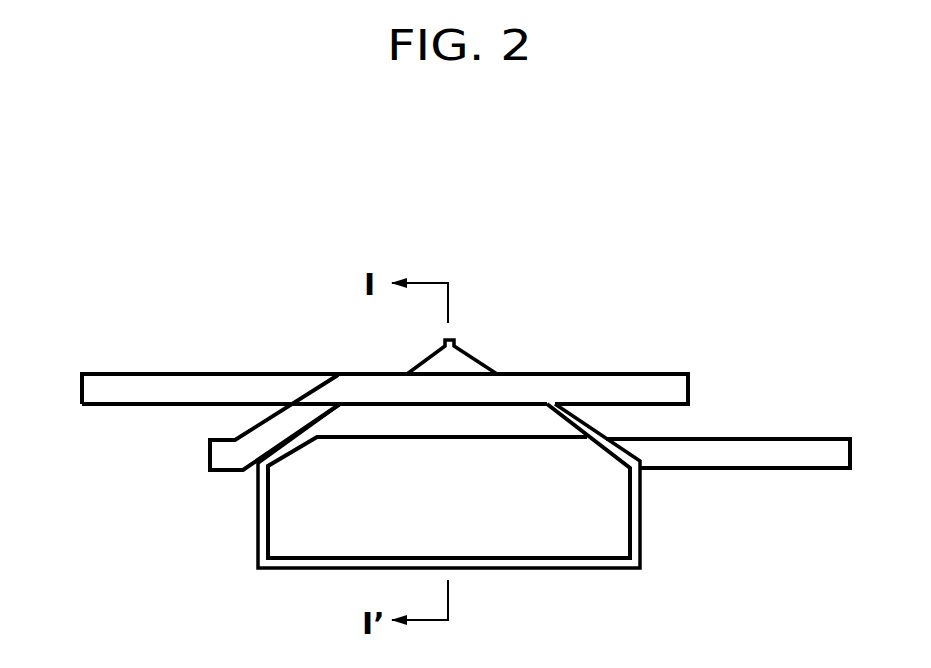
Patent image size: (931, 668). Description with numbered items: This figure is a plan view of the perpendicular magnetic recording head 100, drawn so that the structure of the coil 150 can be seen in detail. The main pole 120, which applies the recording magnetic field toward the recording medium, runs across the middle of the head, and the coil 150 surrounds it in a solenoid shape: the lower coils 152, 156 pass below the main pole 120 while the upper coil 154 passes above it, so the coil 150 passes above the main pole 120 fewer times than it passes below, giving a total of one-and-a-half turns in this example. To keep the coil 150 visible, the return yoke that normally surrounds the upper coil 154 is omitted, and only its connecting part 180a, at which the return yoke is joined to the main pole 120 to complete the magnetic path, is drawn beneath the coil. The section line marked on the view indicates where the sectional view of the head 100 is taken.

The perpendicular magnetic recording head 100 is at (750, 288).
The main pole 120 is at (467, 365).
The coil 150 is at (113, 370).
The lower coil 152 is at (240, 380).
The upper coil 154 is at (598, 385).
The lower coil 156 is at (757, 462).
The connecting part 180a is at (608, 537).